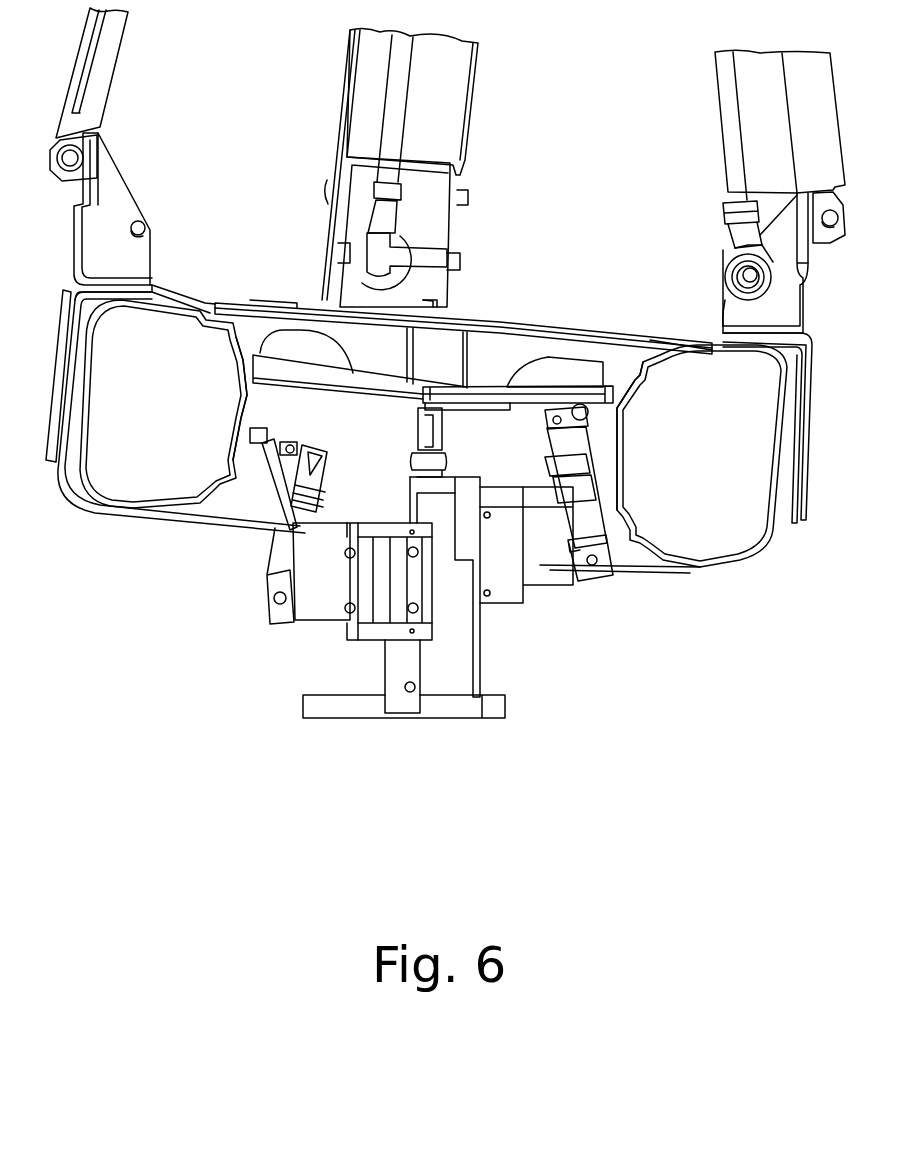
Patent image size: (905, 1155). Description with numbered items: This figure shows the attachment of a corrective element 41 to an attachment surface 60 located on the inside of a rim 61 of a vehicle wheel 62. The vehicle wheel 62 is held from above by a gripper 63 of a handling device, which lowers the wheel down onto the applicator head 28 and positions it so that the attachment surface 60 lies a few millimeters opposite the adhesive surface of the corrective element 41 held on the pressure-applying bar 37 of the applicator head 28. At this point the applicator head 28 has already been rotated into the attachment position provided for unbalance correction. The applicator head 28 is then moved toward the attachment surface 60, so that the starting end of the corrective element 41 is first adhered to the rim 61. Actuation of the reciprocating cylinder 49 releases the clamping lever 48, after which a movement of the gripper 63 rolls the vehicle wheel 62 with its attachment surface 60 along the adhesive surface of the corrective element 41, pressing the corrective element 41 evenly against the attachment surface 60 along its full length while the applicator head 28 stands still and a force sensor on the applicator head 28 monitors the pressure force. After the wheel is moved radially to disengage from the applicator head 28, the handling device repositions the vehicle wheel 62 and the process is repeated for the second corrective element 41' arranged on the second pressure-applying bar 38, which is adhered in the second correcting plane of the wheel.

The applicator head 28 is at (545, 598).
The pressure-applying bar 37 is at (582, 388).
The pressure-applying bar 38 is at (250, 420).
The corrective element 41 is at (670, 436).
The second corrective element 41' is at (204, 401).
The clamping lever 48 is at (593, 420).
The reciprocating cylinder 49 is at (583, 523).
The attachment surface 60 is at (311, 372).
The rim 61 is at (218, 303).
The vehicle wheel 62 is at (97, 527).
The gripper 63 is at (342, 72).